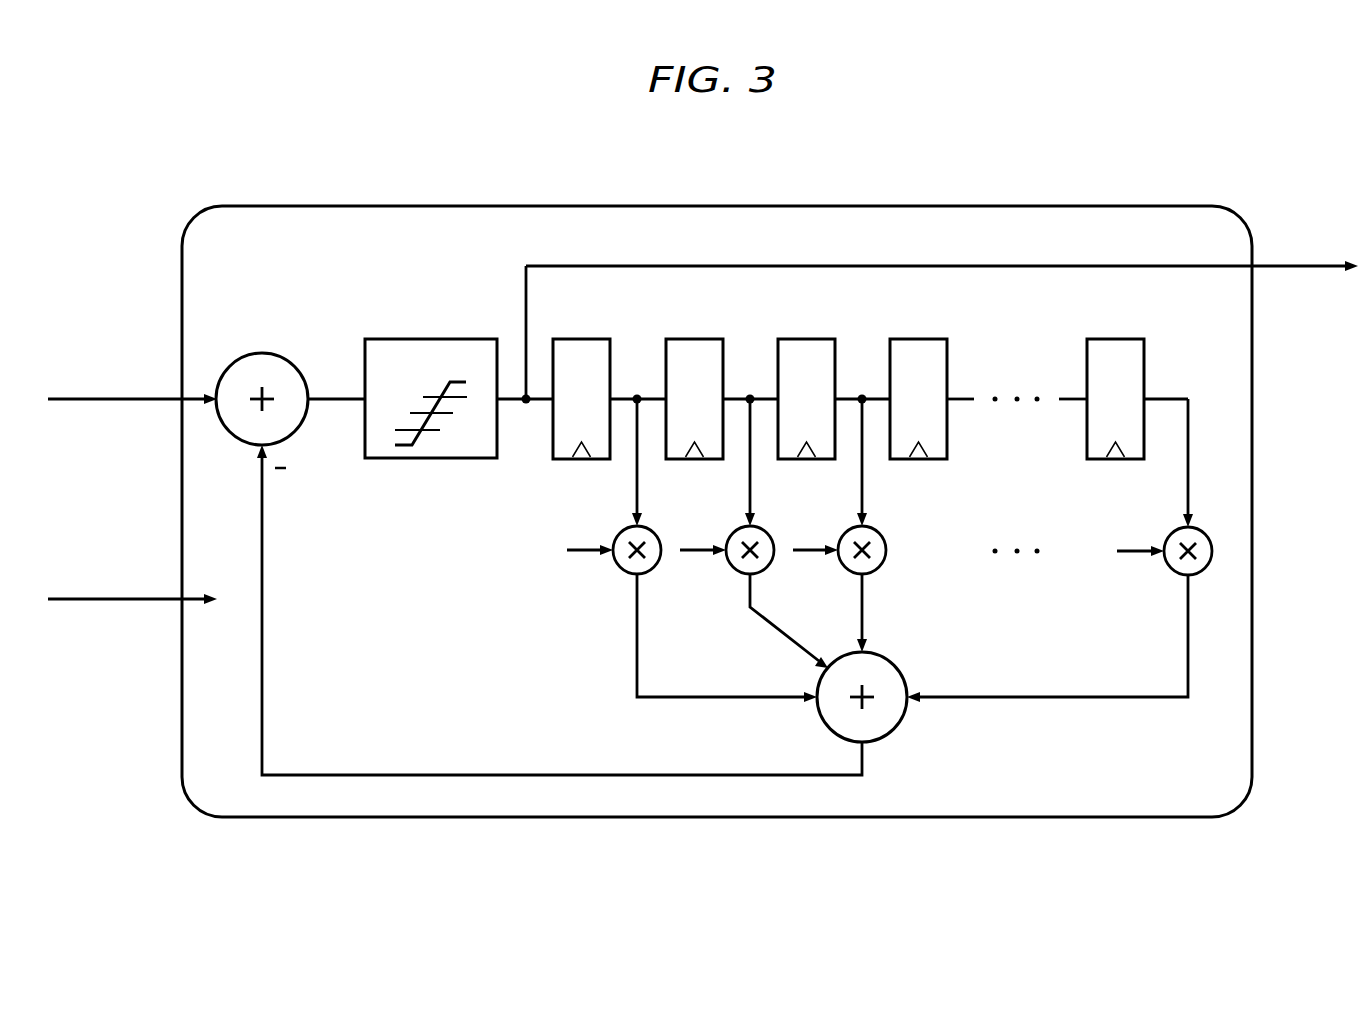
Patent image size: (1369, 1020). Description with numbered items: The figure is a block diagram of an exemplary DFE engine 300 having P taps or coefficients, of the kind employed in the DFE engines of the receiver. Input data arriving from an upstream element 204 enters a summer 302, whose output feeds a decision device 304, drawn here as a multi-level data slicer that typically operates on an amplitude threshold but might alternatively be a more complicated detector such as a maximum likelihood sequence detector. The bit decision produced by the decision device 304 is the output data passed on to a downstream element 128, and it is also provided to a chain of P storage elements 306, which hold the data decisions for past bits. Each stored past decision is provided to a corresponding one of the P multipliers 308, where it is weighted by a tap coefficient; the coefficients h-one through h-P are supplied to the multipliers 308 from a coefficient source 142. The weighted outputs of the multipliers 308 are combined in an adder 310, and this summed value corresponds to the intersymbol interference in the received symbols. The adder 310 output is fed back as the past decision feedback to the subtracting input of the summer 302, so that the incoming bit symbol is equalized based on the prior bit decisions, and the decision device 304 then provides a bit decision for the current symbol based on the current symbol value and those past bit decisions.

The DFE engine 300 is at (734, 136).
The summer 302 is at (258, 353).
The decision device 304 is at (436, 339).
The storage elements 306 is at (580, 339).
The multipliers 308 is at (1170, 572).
The adder 310 is at (899, 669).
The downstream block receiving output data 128 is at (940, 289).
The tap coefficient source 142 is at (132, 557).
The upstream block providing input data 204 is at (132, 354).